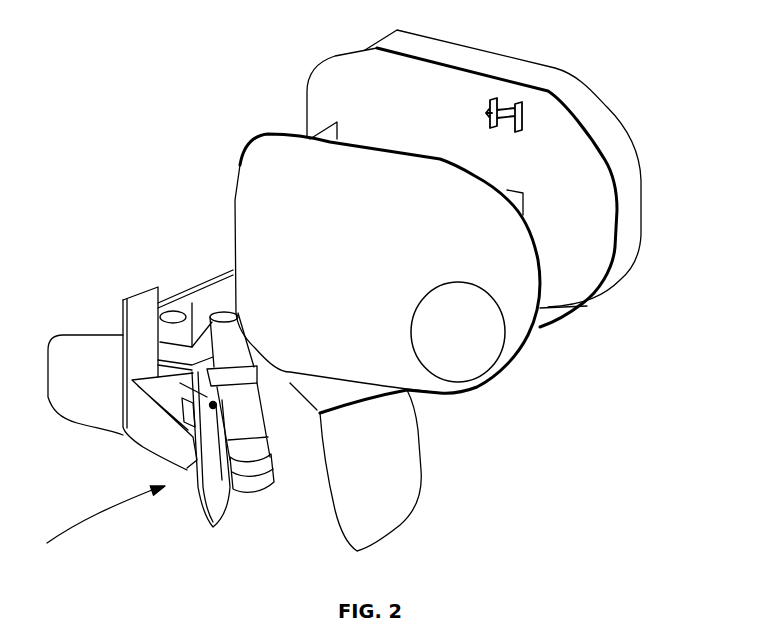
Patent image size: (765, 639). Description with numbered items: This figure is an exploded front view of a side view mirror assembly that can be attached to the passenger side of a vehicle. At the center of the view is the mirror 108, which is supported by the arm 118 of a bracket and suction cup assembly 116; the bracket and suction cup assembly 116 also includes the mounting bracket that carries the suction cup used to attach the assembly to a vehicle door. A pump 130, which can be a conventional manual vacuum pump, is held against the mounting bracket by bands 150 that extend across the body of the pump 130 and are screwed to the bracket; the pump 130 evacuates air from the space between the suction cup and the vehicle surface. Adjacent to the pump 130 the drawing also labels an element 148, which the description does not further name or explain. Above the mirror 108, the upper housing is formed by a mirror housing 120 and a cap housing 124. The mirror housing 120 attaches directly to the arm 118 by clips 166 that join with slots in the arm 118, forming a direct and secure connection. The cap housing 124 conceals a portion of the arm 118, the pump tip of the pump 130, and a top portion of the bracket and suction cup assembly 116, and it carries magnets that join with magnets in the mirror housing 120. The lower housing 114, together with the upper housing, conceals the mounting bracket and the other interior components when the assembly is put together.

The mirror 108 is at (383, 376).
The lower housing 114 is at (397, 460).
The bracket and suction cup assembly 116 is at (96, 533).
The arm 118 is at (215, 285).
The mirror housing 120 is at (610, 119).
The cap housing 124 is at (87, 413).
The pump 130 is at (252, 428).
The arm 148 is at (212, 528).
The bands 150 is at (255, 469).
The clips 166 is at (503, 108).